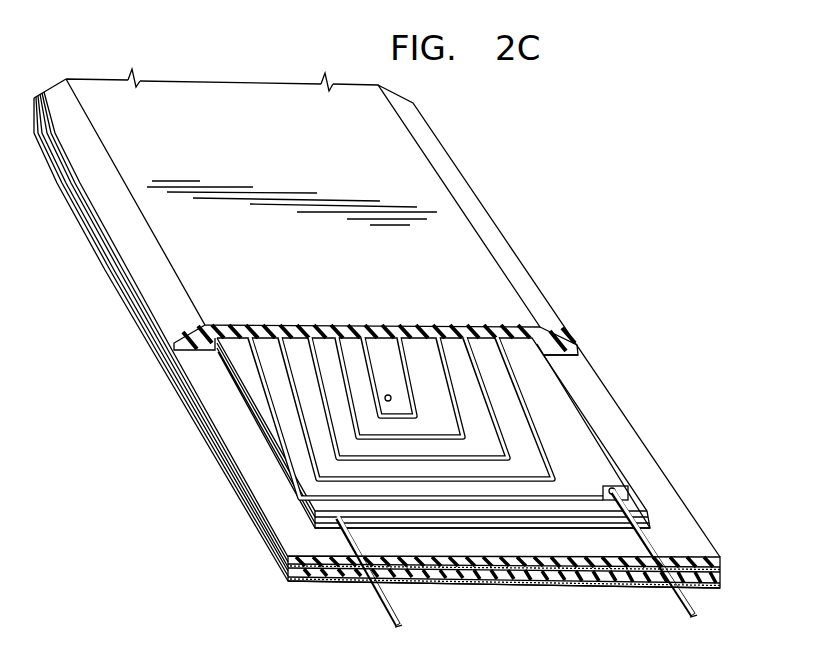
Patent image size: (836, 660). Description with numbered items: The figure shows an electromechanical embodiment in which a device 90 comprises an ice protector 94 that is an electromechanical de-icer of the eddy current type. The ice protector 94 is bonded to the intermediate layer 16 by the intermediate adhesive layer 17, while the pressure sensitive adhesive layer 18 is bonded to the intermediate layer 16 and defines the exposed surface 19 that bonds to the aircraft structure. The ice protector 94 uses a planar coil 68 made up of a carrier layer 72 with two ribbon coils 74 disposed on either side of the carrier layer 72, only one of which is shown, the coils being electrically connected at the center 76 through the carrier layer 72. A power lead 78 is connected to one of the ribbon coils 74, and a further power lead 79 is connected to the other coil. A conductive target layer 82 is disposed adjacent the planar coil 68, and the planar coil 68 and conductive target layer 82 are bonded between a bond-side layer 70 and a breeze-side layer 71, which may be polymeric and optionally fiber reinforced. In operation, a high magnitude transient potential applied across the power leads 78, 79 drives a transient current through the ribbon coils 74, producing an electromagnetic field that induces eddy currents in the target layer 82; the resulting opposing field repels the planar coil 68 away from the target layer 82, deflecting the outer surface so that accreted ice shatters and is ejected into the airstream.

The device 90 is at (403, 356).
The ice protector 94 is at (470, 251).
The breeze-side layer 71 is at (502, 332).
The center 76 is at (390, 396).
The ribbon coils 74 is at (518, 400).
The planar coil 68 is at (563, 413).
The carrier layer 72 is at (636, 503).
The power lead 78 is at (694, 600).
The power lead 79 is at (385, 603).
The conductive target layer 82 is at (507, 527).
The intermediate layer 16 is at (458, 570).
The bond-side layer 70 is at (607, 562).
The intermediate adhesive layer 17 is at (649, 565).
The pressure sensitive adhesive layer 18 is at (332, 580).
The exposed surface 19 is at (305, 580).